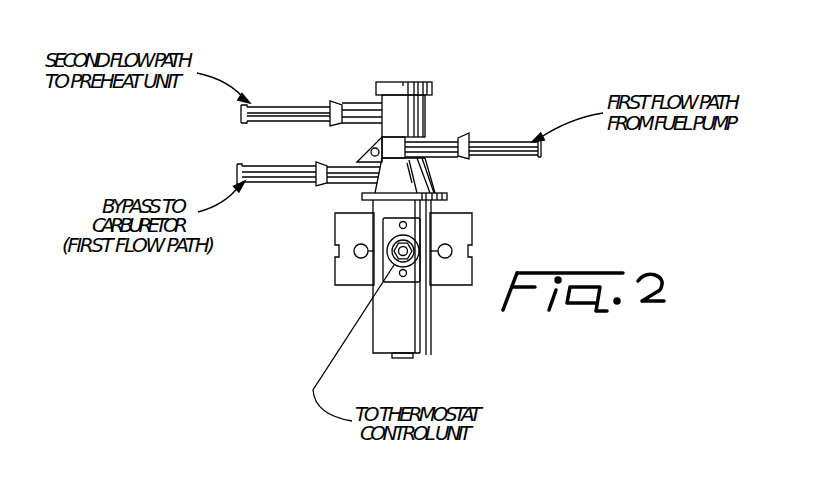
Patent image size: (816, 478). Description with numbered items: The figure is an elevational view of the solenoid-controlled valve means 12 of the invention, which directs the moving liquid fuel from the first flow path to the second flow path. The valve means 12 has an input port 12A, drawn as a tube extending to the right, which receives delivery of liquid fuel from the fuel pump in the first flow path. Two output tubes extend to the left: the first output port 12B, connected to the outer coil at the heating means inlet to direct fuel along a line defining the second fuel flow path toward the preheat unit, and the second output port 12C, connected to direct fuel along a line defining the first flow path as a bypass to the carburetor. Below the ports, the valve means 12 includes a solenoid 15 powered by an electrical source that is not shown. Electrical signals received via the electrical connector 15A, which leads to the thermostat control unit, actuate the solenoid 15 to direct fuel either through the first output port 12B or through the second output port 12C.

The solenoid-controlled valve means 12 is at (324, 287).
The input port 12A is at (502, 140).
The first output port 12B is at (286, 107).
The second output port 12C is at (281, 183).
The solenoid 15 is at (430, 333).
The electrical connector 15A is at (329, 365).